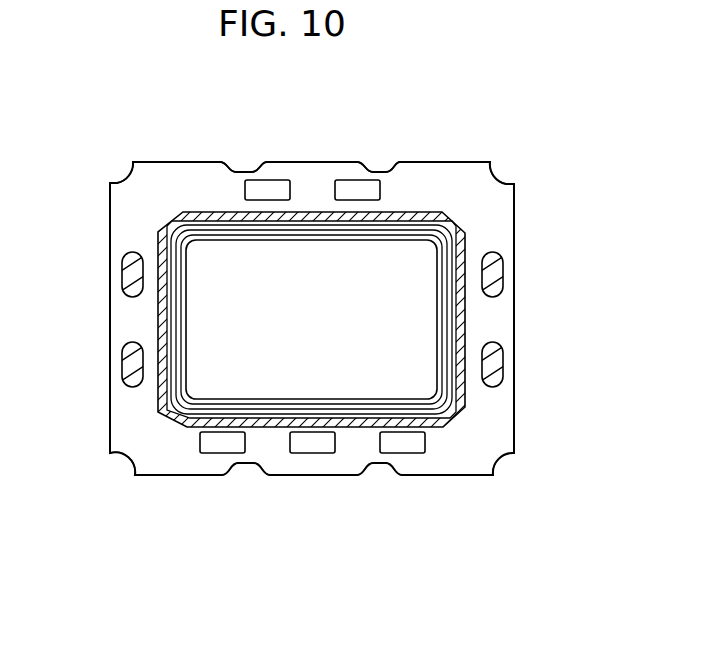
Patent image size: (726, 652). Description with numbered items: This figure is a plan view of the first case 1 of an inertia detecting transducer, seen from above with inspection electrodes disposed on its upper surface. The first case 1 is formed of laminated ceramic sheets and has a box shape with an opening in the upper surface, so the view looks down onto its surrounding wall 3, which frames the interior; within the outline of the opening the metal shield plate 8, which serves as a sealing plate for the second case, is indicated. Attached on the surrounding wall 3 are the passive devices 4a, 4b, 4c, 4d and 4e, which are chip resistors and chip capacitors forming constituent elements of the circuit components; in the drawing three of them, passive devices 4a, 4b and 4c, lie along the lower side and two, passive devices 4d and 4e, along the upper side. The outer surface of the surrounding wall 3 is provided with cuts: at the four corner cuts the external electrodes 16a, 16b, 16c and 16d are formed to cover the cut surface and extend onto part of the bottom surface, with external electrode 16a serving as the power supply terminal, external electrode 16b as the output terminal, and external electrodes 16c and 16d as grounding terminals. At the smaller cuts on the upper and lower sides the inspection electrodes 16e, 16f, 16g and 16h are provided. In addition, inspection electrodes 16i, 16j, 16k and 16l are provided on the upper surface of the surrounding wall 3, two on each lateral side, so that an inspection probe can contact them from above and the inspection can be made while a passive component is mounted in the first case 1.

The first case 1 is at (517, 232).
The surrounding wall 3 is at (507, 204).
The metal shield plate 8 is at (393, 253).
The passive device 4a is at (407, 445).
The passive device 4b is at (312, 447).
The passive device 4c is at (218, 450).
The passive device 4d is at (350, 190).
The passive device 4e is at (270, 190).
The external electrode 16a is at (497, 462).
The external electrode 16b is at (507, 177).
The external electrode 16c is at (128, 462).
The external electrode 16d is at (128, 172).
The inspection electrode 16e is at (380, 465).
The inspection electrode 16f is at (245, 465).
The inspection electrode 16g is at (378, 172).
The inspection electrode 16h is at (242, 172).
The inspection electrode 16i is at (498, 357).
The inspection electrode 16j is at (495, 273).
The inspection electrode 16k is at (132, 368).
The inspection electrode 16l is at (132, 272).